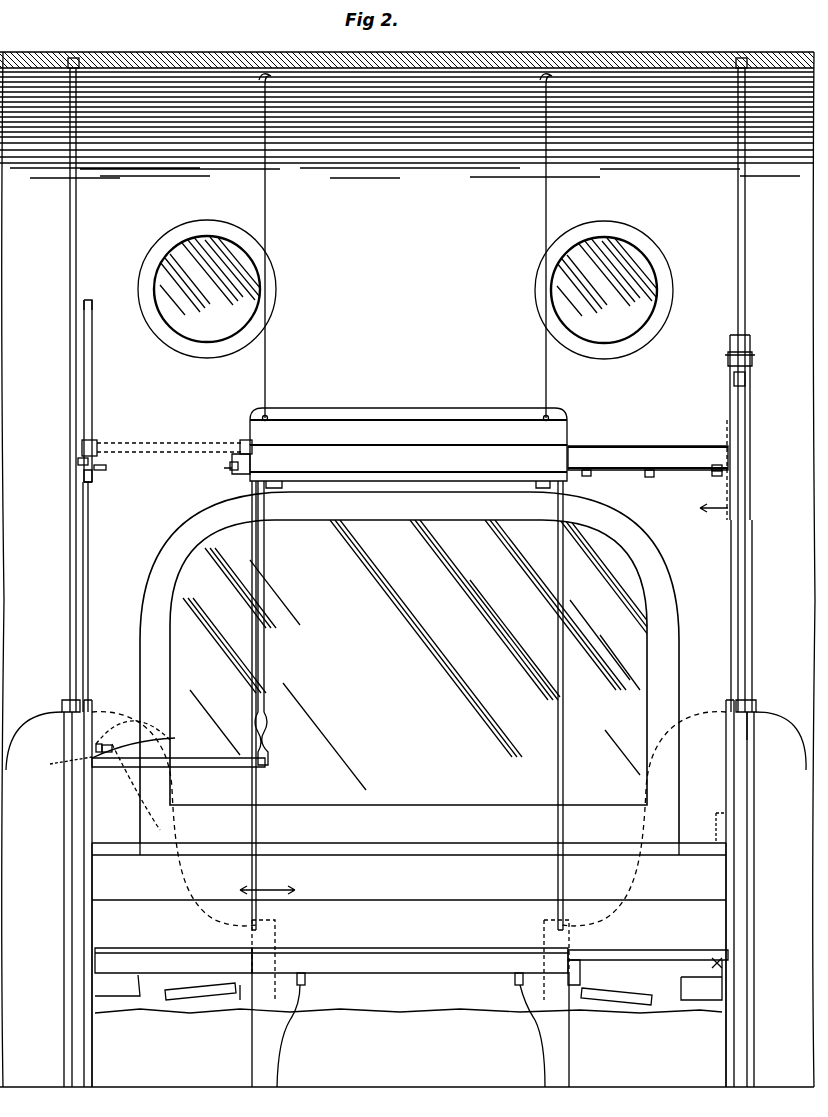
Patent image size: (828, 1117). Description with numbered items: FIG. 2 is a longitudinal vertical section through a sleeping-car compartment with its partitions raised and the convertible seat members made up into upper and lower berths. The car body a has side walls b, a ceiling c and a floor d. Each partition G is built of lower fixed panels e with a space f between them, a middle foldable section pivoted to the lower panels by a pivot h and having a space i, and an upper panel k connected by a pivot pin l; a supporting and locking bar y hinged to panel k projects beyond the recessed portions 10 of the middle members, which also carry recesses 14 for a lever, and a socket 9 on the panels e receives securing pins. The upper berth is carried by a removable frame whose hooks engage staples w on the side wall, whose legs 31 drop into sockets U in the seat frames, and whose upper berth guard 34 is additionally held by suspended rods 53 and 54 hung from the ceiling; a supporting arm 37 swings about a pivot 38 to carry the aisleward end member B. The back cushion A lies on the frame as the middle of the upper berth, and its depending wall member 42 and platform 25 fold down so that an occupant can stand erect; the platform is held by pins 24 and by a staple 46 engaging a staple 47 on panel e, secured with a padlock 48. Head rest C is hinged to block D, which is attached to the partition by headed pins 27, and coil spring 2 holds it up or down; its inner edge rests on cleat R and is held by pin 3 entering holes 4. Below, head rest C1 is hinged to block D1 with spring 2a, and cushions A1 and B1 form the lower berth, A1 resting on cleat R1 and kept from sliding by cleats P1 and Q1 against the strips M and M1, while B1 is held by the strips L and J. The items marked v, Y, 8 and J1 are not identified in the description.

The car body a is at (12, 50).
The roof or ceiling c is at (604, 68).
The side walls b is at (407, 194).
The hanger brackets / pins v is at (80, 56).
The upper foldable partition section panel k is at (68, 212).
The space between middle partition panels i is at (68, 522).
The socket member 9 is at (70, 562).
The suspended rod or link 53 is at (267, 234).
The suspended rod or link 54 is at (544, 230).
The supporting and locking bar y is at (188, 310).
The holes 4 is at (94, 298).
The head rest C is at (94, 400).
The coil spring 2 is at (98, 442).
The headed securing pins 27 is at (78, 462).
The block D is at (92, 484).
The upper berth guard 34 is at (376, 406).
The seat member A is at (444, 452).
The pin 3 is at (242, 444).
The cleat R is at (232, 462).
The staples w is at (276, 487).
The cushion or seat member B is at (614, 450).
The supporting bar or arm 37 is at (594, 477).
The pivot 38 is at (652, 478).
The pivot pin l is at (756, 362).
The recesses 14 is at (734, 384).
The recessed portions 10 is at (714, 519).
The depending wall member 42 is at (270, 690).
The standards or legs 31 is at (258, 798).
The main window Y is at (409, 667).
The partition G is at (94, 700).
The pivot h is at (64, 702).
The space f is at (66, 738).
The panels e is at (74, 818).
The supporting strip L is at (750, 736).
The staple 46 is at (99, 744).
The staple 47 is at (112, 752).
The padlock 48 is at (118, 718).
The headed securing and supporting pins 24 is at (58, 766).
The platform member 25 is at (128, 768).
The movement arrow 8 is at (267, 881).
The sockets U is at (409, 899).
The cushion member B1 is at (134, 956).
The cushion member A1 is at (388, 956).
The head rest C1 is at (670, 950).
The cleat R1 is at (582, 966).
The coil spring 2a is at (712, 966).
The block D1 is at (724, 984).
The supporting strip M is at (306, 980).
The supporting strip M1 is at (514, 980).
The supporting part J is at (122, 992).
The right spring bar J1 is at (708, 1002).
The cleat P1 is at (300, 1010).
The cleat Q1 is at (522, 1008).
The floor d is at (430, 1086).